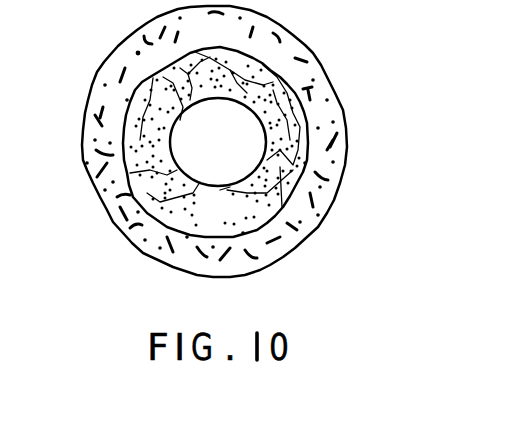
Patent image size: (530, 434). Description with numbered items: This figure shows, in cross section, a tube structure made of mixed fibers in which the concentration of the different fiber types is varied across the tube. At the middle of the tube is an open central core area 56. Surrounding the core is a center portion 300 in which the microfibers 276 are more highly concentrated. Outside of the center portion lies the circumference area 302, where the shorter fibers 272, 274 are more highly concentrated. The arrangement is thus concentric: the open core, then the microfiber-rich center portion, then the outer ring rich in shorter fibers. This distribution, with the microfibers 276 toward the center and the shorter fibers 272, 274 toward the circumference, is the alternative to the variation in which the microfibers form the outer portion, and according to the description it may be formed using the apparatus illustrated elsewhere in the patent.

The open central core area 56 is at (232, 151).
The shorter fibers 272 is at (305, 93).
The shorter fibers 274 is at (114, 206).
The microfibers 276 is at (180, 68).
The center portion 300 is at (240, 221).
The circumference area 302 is at (232, 40).